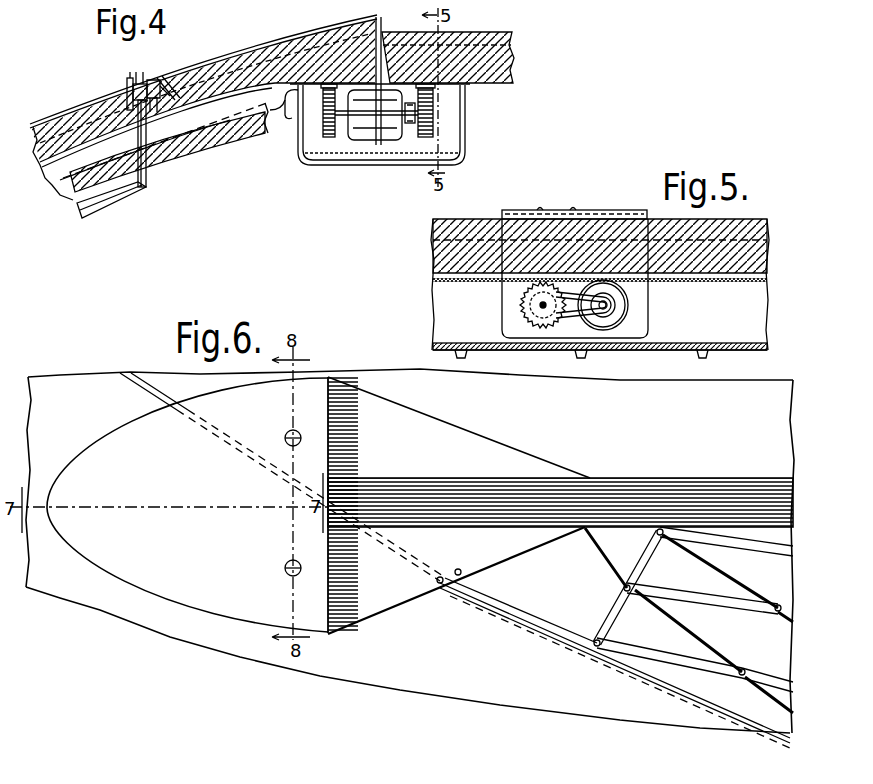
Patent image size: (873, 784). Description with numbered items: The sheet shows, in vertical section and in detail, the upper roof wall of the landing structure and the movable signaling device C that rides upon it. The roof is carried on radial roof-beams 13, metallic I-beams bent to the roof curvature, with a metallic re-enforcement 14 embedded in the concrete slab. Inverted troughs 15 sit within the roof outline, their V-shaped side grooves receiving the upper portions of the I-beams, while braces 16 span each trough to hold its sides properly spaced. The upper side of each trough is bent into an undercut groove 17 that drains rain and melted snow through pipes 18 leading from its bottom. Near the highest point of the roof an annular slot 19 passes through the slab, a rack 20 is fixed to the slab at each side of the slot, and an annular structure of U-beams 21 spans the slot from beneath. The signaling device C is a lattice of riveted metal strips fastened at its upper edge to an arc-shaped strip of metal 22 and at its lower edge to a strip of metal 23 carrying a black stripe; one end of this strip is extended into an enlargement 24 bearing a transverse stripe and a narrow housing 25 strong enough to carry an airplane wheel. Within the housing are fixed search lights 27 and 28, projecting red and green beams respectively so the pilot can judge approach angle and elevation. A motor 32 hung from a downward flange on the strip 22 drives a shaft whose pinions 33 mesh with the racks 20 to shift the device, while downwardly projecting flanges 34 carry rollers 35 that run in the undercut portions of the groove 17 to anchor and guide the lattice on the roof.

In FIG. 4, the radial roof-beams 13 is at (245, 110).
In FIG. 4, the metallic re-enforcement 14 is at (290, 71).
In FIG. 4, the inverted troughs 15 is at (127, 110).
In FIG. 4, the braces 16 is at (170, 100).
In FIG. 4, the undercut groove 17 is at (152, 117).
In FIG. 4, the pipes 18 is at (125, 197).
In FIG. 4, the annular slot 19 is at (320, 100).
In FIG. 4, the rack 20 is at (467, 45).
In FIG. 5, the rack 20 is at (493, 283).
In FIG. 4, the annular structure of U-beams 21 is at (457, 157).
In FIG. 5, the annular structure of U-beams 21 is at (707, 352).
In FIG. 4, the strip of metal 22 is at (393, 74).
In FIG. 5, the strip of metal 22 is at (643, 293).
In FIG. 6, the strip of metal 22 is at (577, 650).
In FIG. 6, the strip of metal 23 is at (735, 465).
In FIG. 6, the enlargement 24 is at (460, 437).
In FIG. 6, the housing 25 is at (187, 505).
In FIG. 6, the search light 27 is at (285, 572).
In FIG. 6, the search light 28 is at (285, 438).
In FIG. 4, the motor 32 is at (390, 137).
In FIG. 5, the motor 32 is at (620, 315).
In FIG. 4, the pinions 33 is at (330, 137).
In FIG. 5, the pinions 33 is at (520, 305).
In FIG. 4, the downwardly projecting flanges 34 is at (143, 80).
In FIG. 4, the rollers 35 is at (160, 83).
In FIG. 4, the signaling device C is at (240, 20).
In FIG. 5, the signaling device C is at (548, 208).
In FIG. 6, the signaling device C is at (677, 593).